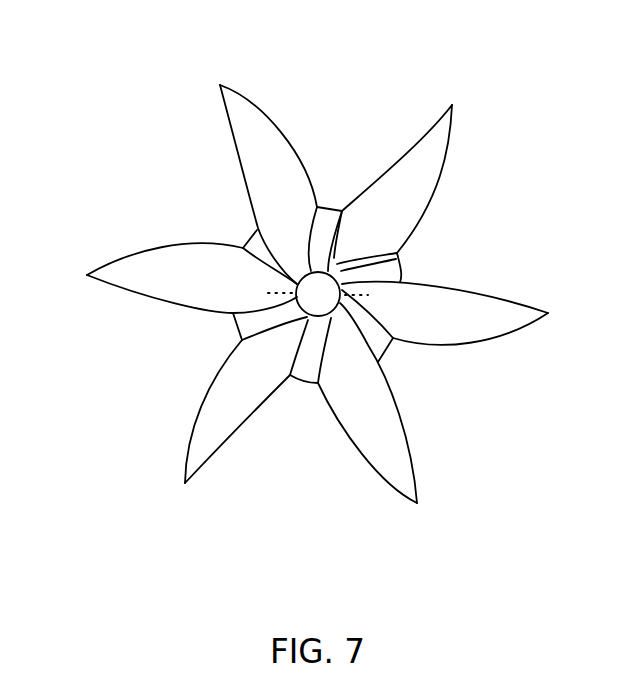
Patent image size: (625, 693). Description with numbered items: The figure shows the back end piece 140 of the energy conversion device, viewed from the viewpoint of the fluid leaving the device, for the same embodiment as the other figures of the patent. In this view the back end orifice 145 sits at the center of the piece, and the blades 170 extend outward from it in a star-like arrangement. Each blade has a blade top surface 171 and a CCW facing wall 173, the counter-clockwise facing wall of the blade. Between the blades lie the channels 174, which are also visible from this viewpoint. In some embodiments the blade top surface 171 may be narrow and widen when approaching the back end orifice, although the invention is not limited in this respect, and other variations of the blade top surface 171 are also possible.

The back end piece 140 is at (290, 264).
The back end orifice 145 is at (305, 282).
The blades 170 is at (434, 193).
The CCW facing wall 173 is at (411, 192).
The blade top surface 171 is at (342, 261).
The channels 174 is at (395, 268).